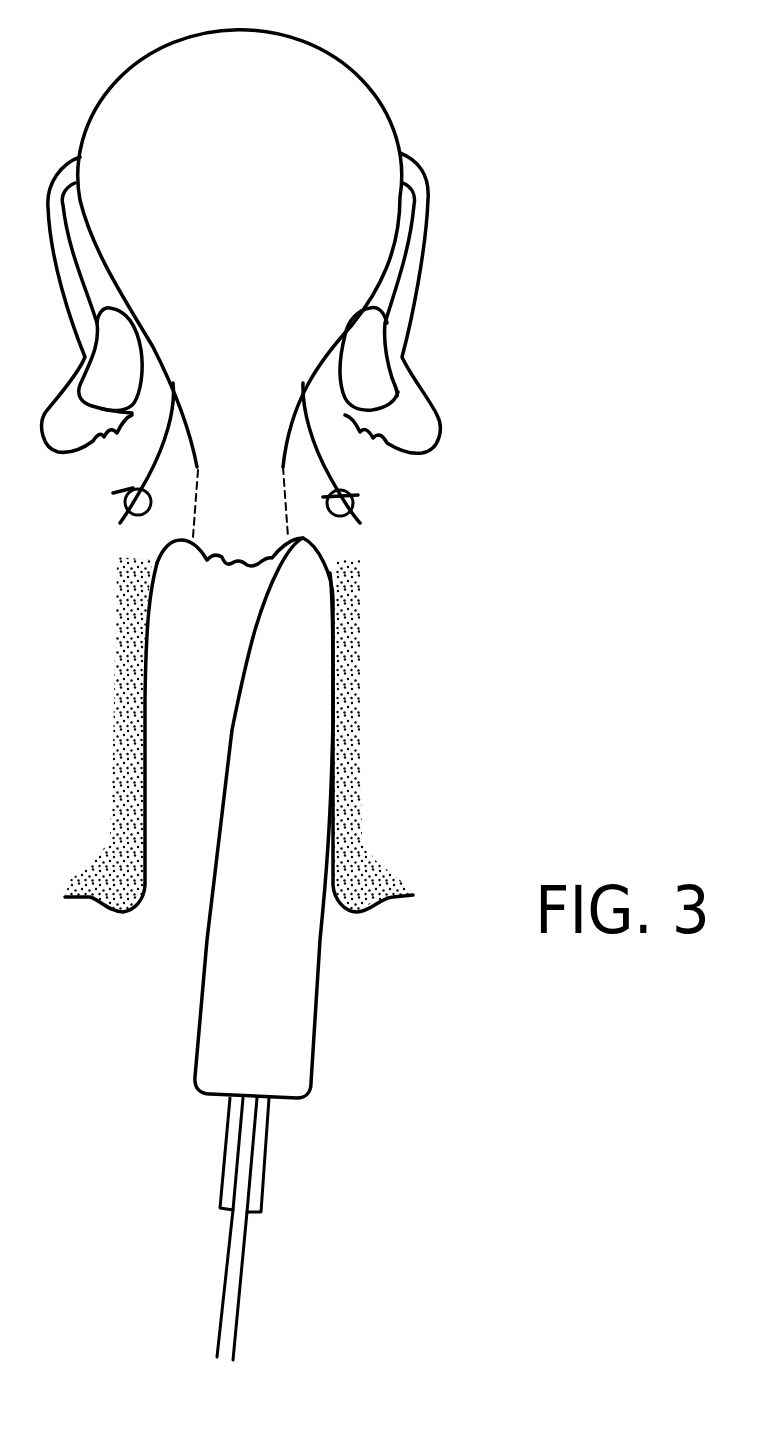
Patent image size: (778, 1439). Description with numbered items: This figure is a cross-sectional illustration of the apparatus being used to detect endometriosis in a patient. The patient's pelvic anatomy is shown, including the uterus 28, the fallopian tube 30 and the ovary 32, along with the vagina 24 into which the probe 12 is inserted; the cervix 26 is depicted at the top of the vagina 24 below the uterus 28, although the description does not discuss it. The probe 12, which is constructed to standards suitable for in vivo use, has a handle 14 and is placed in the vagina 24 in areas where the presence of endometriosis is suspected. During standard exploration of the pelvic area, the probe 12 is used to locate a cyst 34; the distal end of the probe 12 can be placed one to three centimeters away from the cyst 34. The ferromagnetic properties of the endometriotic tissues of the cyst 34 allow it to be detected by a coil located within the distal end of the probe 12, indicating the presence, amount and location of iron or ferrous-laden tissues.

The probe 12 is at (322, 970).
The handle 14 is at (268, 1153).
The vagina 24 is at (195, 700).
The cervix 26 is at (200, 560).
The uterus 28 is at (290, 100).
The fallopian tube 30 is at (400, 280).
The ovary 32 is at (370, 368).
The cyst 34 is at (352, 511).